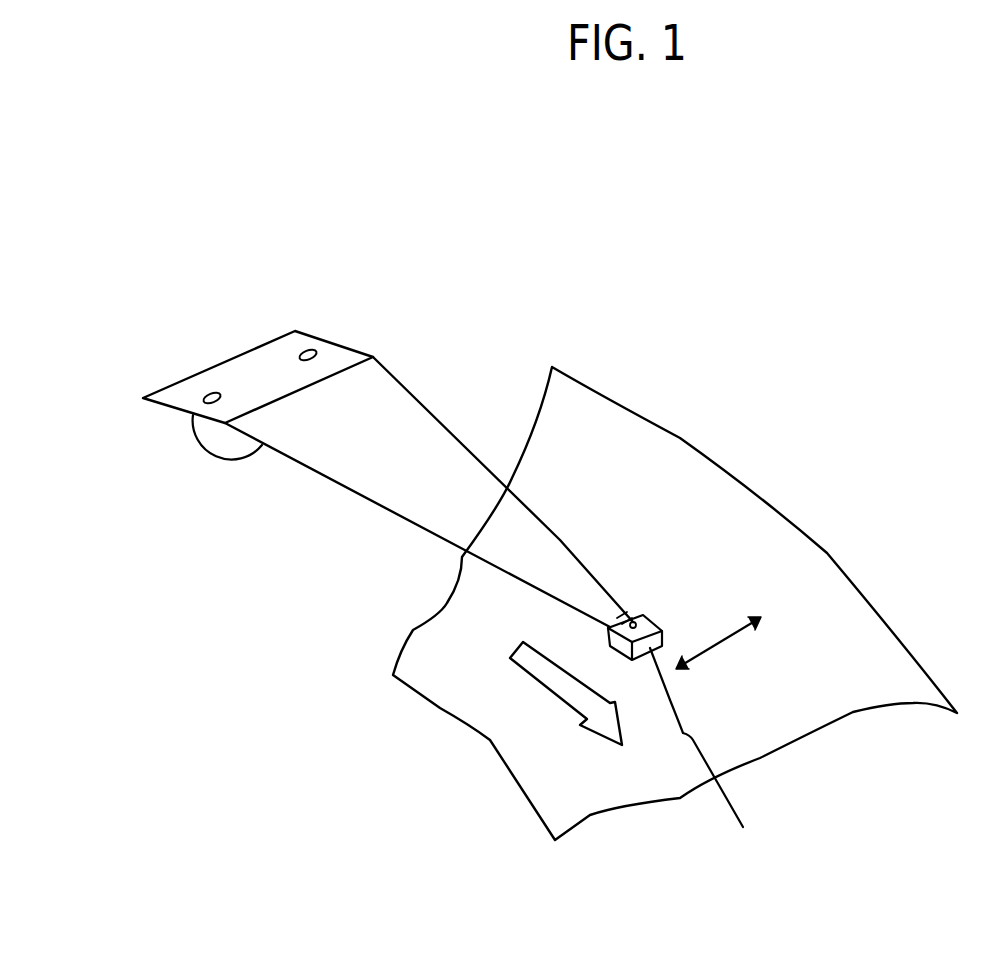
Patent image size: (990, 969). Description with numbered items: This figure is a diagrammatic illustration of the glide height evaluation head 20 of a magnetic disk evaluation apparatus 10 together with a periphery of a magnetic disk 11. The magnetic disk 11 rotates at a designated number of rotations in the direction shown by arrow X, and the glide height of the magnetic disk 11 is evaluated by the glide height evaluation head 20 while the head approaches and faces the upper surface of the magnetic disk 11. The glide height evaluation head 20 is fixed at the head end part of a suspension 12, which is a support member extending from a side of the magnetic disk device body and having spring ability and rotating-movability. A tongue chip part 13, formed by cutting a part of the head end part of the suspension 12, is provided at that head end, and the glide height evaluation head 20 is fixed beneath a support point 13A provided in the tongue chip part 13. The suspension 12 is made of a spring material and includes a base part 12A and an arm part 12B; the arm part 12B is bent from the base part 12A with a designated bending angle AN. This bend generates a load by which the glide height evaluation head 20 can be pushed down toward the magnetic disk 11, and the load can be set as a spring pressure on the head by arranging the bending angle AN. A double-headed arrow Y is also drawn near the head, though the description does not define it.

The magnetic disk evaluation apparatus 10 is at (512, 175).
The magnetic disk 11 is at (830, 555).
The suspension 12 is at (343, 471).
The base part 12A is at (168, 397).
The arm part 12B is at (313, 457).
The tongue chip part 13 is at (650, 622).
The support point 13A is at (634, 620).
The glide height evaluation head 20 is at (714, 746).
The bending angle AN is at (227, 456).
The rotation direction arrow X is at (557, 680).
The head movement direction Y is at (715, 642).